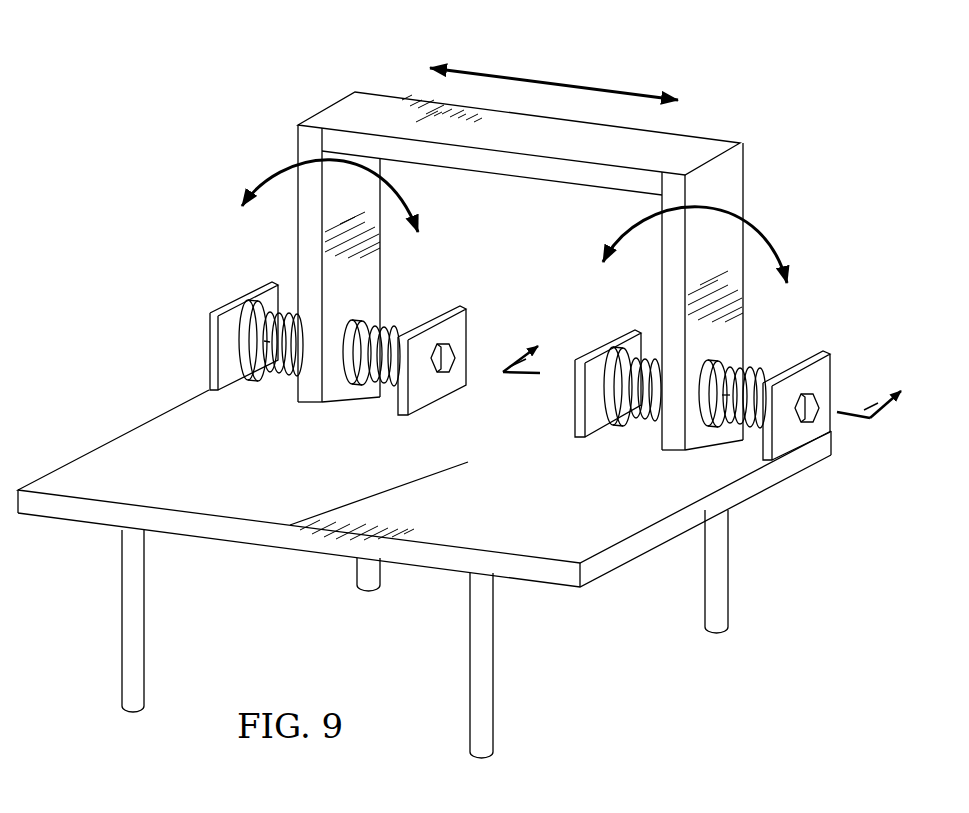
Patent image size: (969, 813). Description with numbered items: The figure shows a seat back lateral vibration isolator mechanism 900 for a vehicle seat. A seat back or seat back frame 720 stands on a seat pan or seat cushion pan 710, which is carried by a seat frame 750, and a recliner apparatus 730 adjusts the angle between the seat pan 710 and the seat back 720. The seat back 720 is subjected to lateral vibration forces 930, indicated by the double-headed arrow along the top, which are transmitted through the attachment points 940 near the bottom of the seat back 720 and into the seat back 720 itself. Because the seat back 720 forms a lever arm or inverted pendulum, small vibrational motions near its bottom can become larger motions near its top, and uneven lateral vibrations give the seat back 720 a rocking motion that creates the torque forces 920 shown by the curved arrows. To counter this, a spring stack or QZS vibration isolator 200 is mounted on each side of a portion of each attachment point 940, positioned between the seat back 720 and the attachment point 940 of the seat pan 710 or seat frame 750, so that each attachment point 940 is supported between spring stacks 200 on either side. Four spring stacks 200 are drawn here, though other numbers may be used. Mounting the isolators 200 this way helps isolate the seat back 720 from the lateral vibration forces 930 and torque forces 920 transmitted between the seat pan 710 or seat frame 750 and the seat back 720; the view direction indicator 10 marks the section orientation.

The seat back lateral vibration isolator mechanism 900 is at (266, 70).
The lateral vibration forces 930 is at (556, 82).
The torque forces 920 is at (272, 162).
The seat back frame 720 is at (745, 150).
The recliner apparatus 730 is at (209, 337).
The spring stack or QZS vibration isolator 200 is at (283, 377).
The seat cushion pan 710 is at (134, 428).
The attachment points 940 is at (360, 363).
The section view direction 10 is at (720, 368).
The seat frame 750 is at (122, 616).